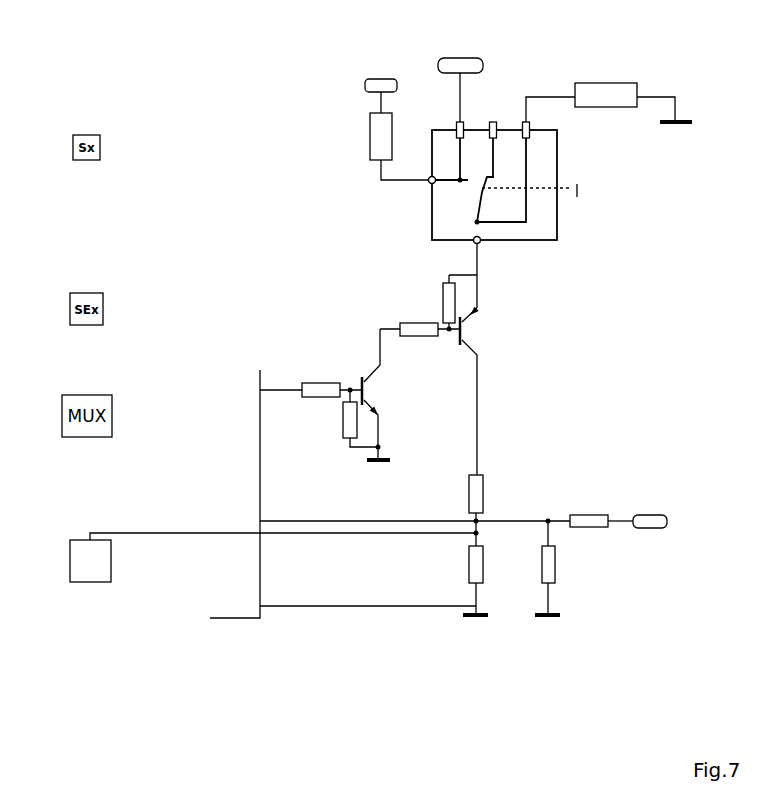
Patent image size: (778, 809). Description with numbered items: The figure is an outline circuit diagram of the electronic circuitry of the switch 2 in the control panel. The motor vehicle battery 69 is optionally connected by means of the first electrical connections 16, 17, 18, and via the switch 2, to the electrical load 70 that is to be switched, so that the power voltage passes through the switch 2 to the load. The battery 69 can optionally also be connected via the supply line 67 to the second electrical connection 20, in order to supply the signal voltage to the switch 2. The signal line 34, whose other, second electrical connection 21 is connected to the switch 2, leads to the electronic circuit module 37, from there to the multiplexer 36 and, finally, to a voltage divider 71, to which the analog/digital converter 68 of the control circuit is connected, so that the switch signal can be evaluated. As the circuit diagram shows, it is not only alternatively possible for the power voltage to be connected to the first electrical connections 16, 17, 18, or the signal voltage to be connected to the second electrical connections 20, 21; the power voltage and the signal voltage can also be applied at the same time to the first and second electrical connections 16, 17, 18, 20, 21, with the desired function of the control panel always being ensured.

The switch 2 is at (543, 220).
The first electrical connection 16 is at (457, 123).
The first electrical connection 17 is at (496, 123).
The first electrical connection 18 is at (530, 130).
The second electrical connection 20 is at (429, 183).
The second electrical connection 21 is at (482, 245).
The signal line 34 is at (480, 263).
The multiplexer 36 is at (255, 402).
The electronic circuit module 37 is at (432, 302).
The supply line 67 is at (377, 167).
The analog/digital converter 68 is at (83, 578).
The motor vehicle battery 69 is at (380, 83).
The electrical load 70 is at (605, 93).
The voltage divider 71 is at (498, 508).